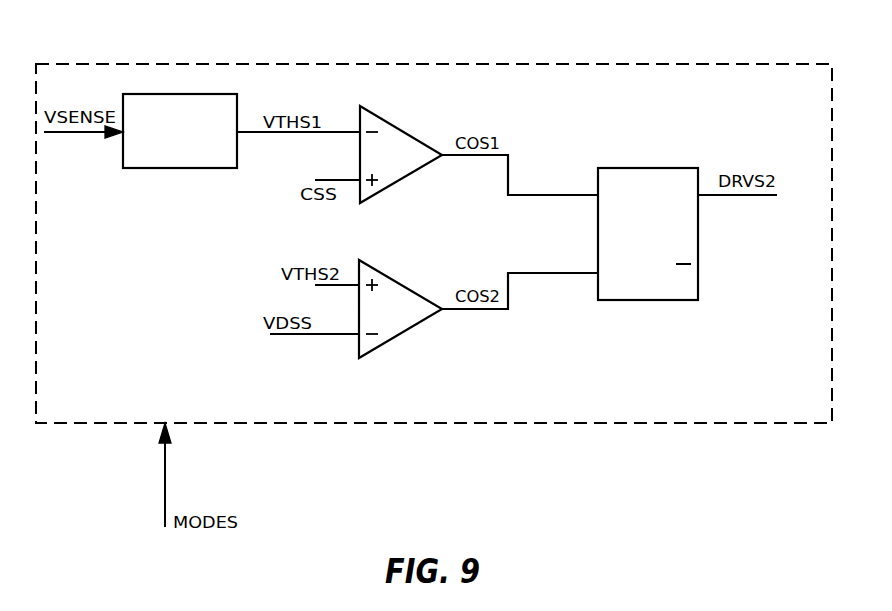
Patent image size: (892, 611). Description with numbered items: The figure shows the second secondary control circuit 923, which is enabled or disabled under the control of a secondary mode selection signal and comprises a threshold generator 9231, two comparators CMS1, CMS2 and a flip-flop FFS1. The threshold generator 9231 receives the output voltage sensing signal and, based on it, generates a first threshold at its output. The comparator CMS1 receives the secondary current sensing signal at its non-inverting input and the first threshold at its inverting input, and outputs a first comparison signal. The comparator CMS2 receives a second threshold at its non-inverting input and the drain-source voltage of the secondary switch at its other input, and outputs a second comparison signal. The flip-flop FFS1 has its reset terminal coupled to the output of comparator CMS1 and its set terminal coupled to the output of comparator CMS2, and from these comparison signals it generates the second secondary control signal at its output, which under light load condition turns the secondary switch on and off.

The second secondary control circuit 923 is at (767, 64).
The threshold generator 9231 is at (152, 168).
The comparator CMS1 is at (401, 154).
The comparator CMS2 is at (400, 309).
The flip-flop FFS1 is at (648, 224).